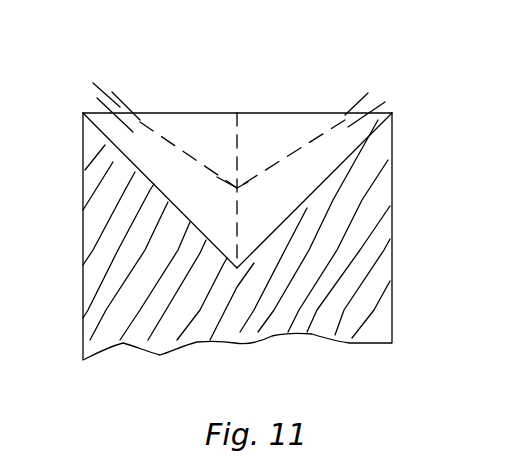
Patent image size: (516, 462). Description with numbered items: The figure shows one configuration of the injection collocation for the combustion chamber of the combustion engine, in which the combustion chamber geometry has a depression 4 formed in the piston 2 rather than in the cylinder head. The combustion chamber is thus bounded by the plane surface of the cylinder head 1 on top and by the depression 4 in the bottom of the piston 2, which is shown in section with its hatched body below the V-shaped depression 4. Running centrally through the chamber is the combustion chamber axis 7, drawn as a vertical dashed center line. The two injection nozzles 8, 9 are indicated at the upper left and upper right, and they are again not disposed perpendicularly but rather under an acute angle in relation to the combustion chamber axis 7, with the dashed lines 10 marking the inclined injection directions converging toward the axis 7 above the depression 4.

The cylinder head 1 is at (304, 113).
The piston 2 is at (110, 242).
The depression 4 is at (275, 217).
The combustion chamber axis 7 is at (237, 128).
The injection nozzle 8 is at (104, 90).
The injection nozzle 9 is at (365, 110).
The bevel line 10 is at (186, 154).